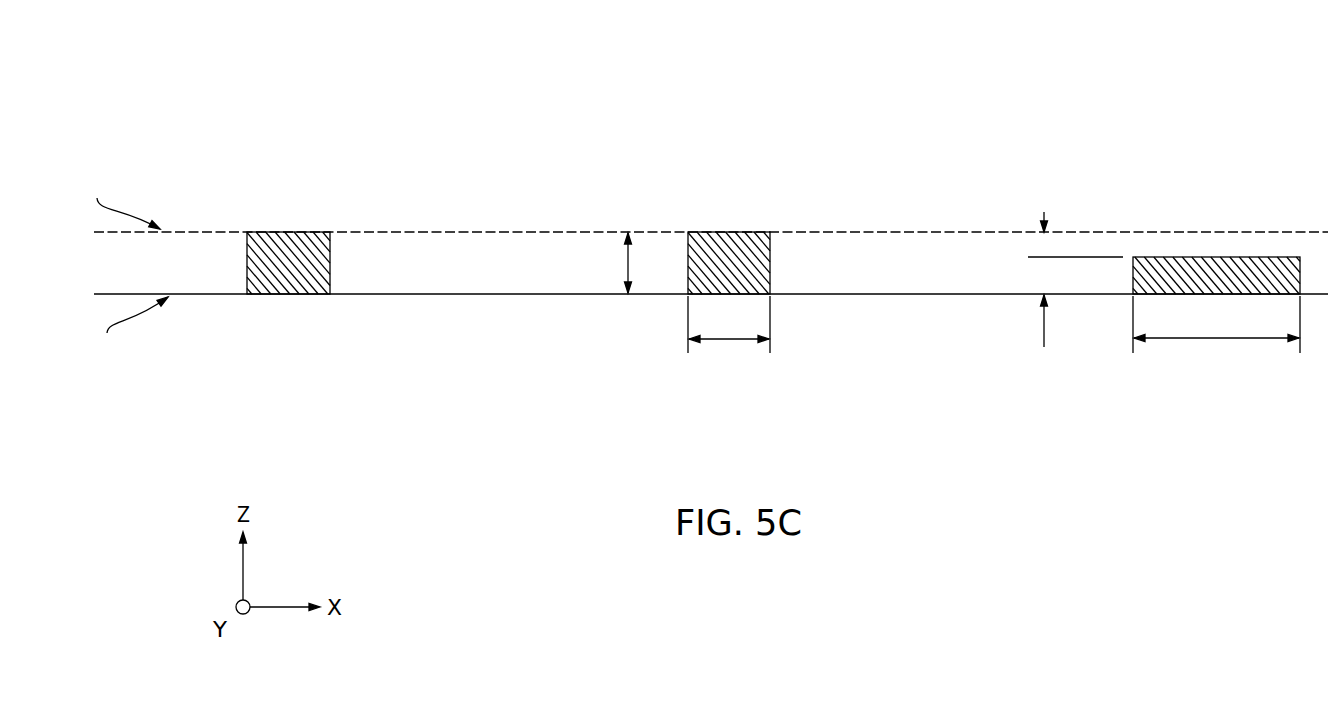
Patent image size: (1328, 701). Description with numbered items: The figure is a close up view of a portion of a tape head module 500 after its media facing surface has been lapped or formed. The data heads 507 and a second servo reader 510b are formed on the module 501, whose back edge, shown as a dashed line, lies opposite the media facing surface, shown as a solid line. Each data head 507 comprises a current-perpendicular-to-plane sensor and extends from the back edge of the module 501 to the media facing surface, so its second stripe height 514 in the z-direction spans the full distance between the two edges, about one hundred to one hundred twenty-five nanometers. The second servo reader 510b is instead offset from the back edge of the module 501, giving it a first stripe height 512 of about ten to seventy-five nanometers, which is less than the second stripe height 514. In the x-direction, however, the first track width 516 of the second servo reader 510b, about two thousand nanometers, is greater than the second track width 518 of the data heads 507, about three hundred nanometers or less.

The tape head module 500 is at (141, 79).
The module 501 is at (480, 232).
The data heads 507 is at (290, 232).
The second servo readers 510b is at (1218, 257).
The first stripe height 512 is at (1075, 279).
The second stripe height 514 is at (628, 260).
The first track width 516 is at (1213, 340).
The second track width 518 is at (733, 340).